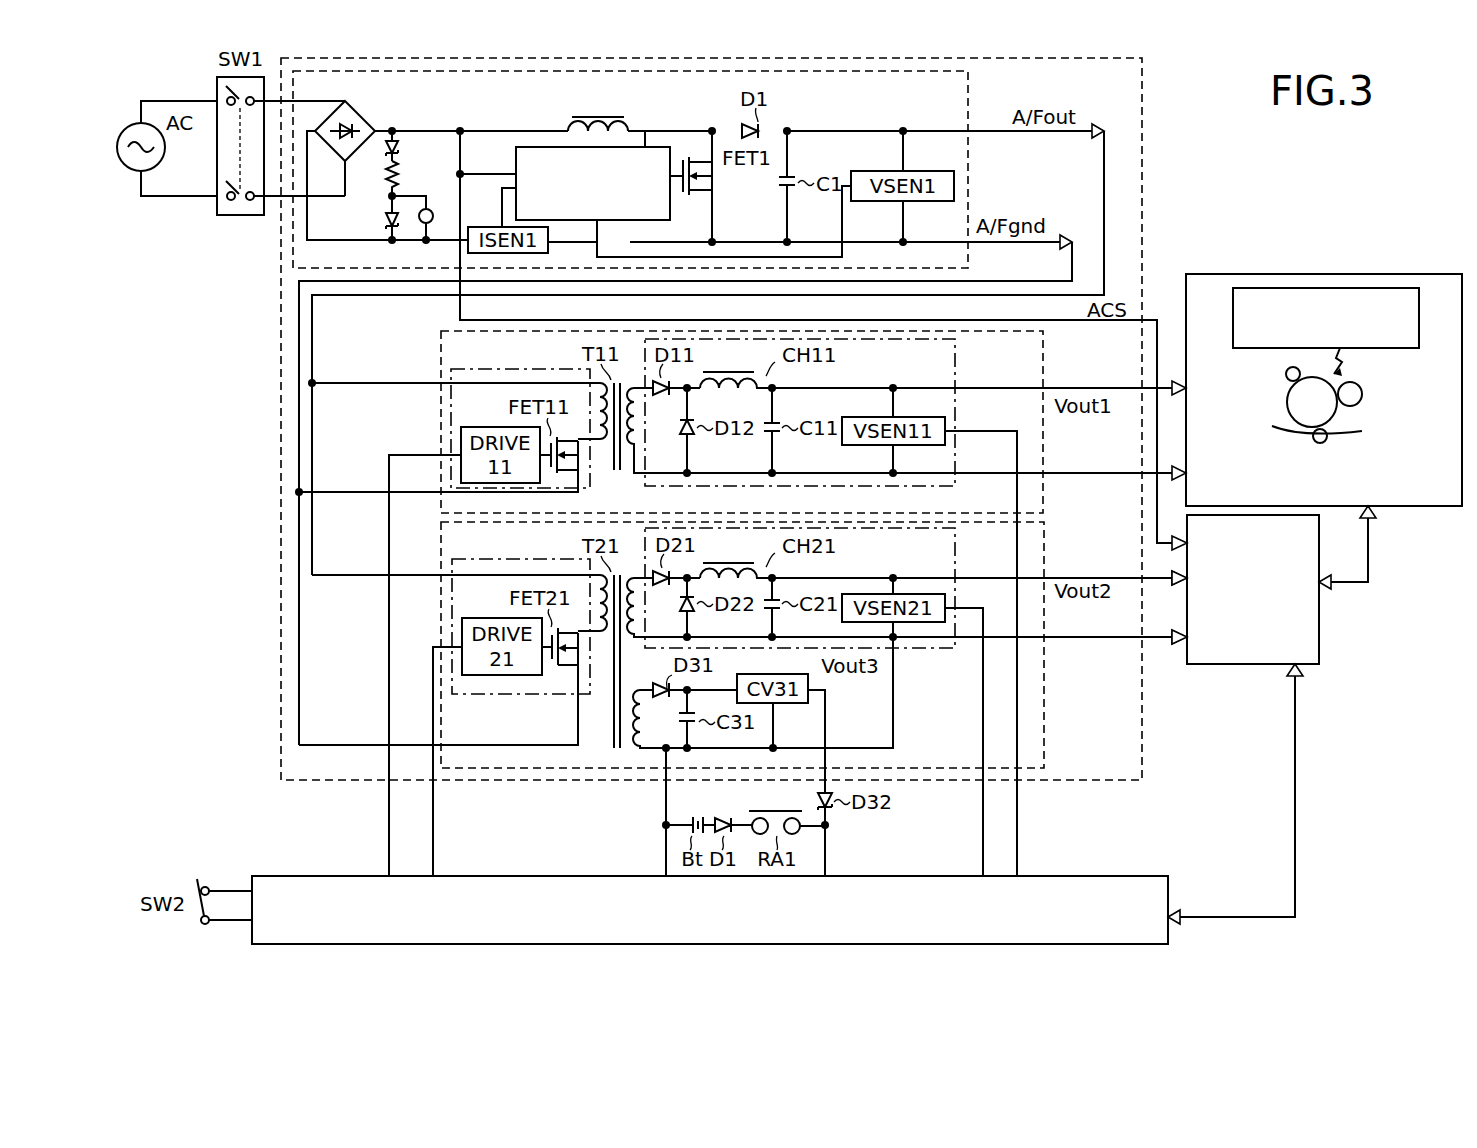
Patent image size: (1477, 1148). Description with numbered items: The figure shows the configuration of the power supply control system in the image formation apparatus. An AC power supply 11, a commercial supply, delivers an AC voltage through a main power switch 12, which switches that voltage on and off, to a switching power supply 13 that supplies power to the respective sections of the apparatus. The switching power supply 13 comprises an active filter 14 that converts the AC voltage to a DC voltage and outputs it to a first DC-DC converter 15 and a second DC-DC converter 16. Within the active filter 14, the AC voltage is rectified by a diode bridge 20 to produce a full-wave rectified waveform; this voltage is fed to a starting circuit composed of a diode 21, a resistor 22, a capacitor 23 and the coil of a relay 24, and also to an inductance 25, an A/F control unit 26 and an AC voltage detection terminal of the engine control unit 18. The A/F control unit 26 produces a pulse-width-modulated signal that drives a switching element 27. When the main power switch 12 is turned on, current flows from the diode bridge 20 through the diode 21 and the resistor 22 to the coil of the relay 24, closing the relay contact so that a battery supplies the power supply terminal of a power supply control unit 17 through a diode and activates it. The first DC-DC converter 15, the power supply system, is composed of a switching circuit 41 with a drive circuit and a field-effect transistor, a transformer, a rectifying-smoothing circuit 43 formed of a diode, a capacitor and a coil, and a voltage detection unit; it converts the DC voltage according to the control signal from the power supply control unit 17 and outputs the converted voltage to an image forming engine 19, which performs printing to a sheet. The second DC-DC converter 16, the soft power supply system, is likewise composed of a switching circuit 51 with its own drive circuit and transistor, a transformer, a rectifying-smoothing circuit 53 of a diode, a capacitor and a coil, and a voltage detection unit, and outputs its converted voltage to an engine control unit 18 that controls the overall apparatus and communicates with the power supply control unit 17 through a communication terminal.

The AC power supply 11 is at (138, 184).
The main power switch 12 is at (238, 228).
The switching power supply 13 is at (1140, 105).
The active filter 14 is at (968, 93).
The first DC-DC converter 15 is at (1044, 358).
The second DC-DC converter 16 is at (1044, 551).
The power supply control unit 17 is at (545, 876).
The engine control unit 18 is at (1215, 664).
The image forming engine 19 is at (1374, 274).
The diode bridge 20 is at (366, 124).
The diode 21 is at (412, 138).
The resistor 22 is at (412, 172).
The capacitor 23 is at (380, 220).
The relay 24 is at (428, 208).
The inductance 25 is at (564, 120).
The A/F control unit 26 is at (646, 124).
The switching element 27 is at (716, 183).
The switching circuit 41 is at (505, 369).
The rectifying-smoothing circuit 43 is at (956, 361).
The switching circuit 51 is at (494, 694).
The rectifying-smoothing circuit 53 is at (956, 553).